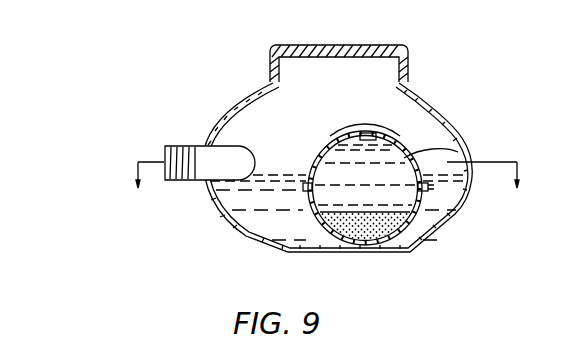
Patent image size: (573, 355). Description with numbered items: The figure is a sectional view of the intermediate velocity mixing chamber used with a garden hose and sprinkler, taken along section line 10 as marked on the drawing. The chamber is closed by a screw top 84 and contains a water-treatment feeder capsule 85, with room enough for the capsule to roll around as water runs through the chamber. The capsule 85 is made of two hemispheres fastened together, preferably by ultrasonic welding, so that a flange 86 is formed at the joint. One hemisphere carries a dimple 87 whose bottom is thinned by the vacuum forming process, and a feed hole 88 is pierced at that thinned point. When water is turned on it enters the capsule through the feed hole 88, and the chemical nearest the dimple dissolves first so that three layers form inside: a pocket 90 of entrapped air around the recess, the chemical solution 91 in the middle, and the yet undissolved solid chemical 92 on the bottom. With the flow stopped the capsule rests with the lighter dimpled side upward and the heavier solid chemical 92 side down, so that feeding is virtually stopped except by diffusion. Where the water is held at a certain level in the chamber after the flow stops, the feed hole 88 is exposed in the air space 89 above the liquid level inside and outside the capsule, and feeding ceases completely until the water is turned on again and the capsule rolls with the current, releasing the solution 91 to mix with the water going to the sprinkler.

The section line 10— 10 is at (326, 188).
The screw top 84 is at (400, 47).
The water-treatment feeder capsule 85 is at (377, 189).
The flange 86 is at (428, 186).
The dimple 87 is at (397, 145).
The feed hole 88 is at (366, 136).
The air space 89 is at (308, 112).
The pocket of entrapped air 90 is at (350, 134).
The chemical solution 91 is at (458, 152).
The undissolved solid chemical 92 is at (357, 236).